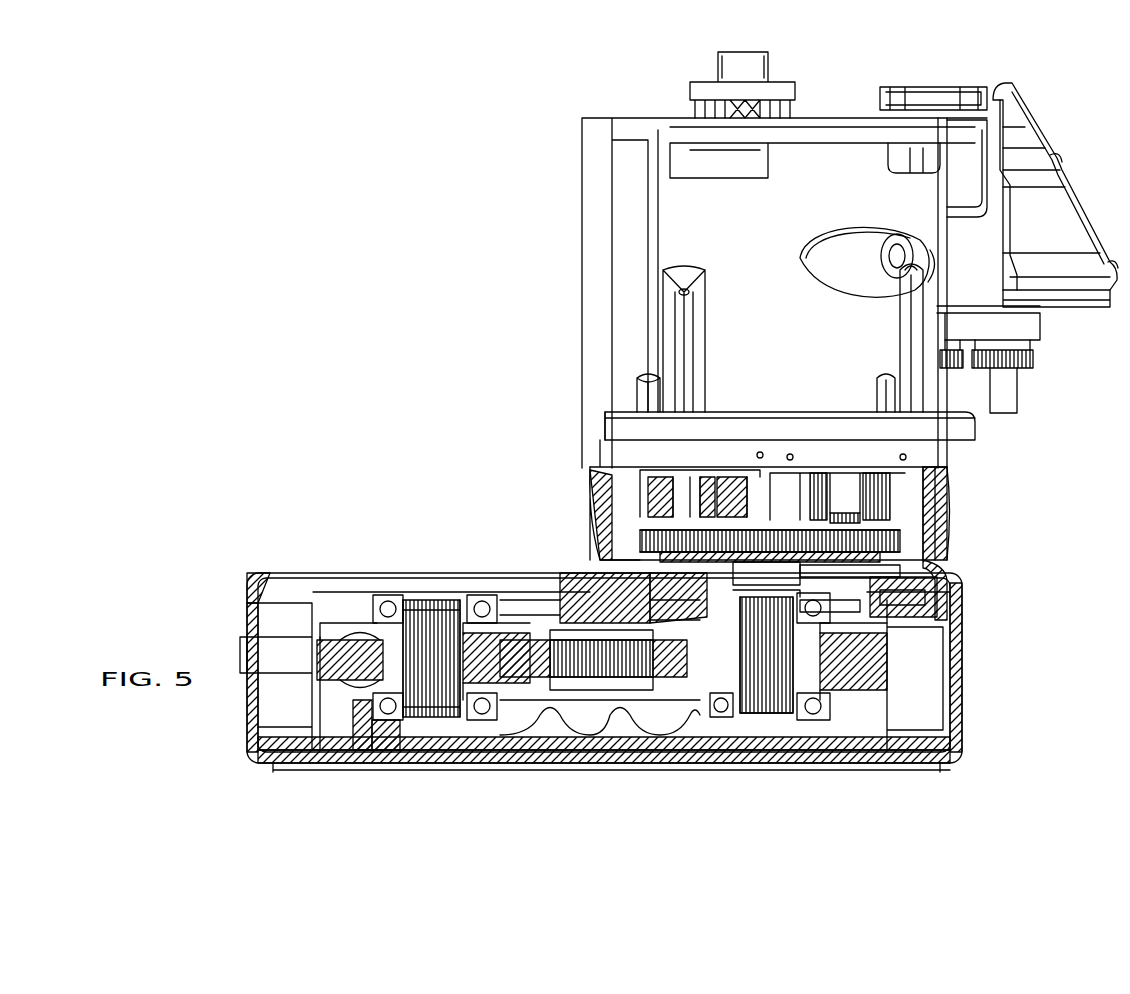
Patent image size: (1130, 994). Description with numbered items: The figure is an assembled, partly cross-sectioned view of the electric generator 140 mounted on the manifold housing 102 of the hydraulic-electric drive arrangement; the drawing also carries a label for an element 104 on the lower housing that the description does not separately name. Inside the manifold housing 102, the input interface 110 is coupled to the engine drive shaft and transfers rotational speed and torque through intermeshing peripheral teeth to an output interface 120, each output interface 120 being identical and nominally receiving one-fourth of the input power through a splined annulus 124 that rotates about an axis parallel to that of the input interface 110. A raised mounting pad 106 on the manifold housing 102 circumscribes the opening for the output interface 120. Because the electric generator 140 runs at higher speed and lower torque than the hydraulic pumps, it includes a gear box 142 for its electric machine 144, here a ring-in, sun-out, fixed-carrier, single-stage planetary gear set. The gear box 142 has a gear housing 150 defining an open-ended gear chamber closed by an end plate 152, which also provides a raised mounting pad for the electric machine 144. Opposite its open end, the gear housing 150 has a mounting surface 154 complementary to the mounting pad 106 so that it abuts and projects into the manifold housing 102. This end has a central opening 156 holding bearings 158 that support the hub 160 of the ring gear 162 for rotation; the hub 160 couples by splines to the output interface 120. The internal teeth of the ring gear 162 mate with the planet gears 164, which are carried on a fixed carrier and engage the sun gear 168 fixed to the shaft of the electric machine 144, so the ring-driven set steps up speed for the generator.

The manifold housing 102 is at (440, 760).
The gear housing 104 is at (968, 740).
The mounting pad 106 is at (885, 583).
The input interface 110 is at (610, 655).
The output interface 120 is at (345, 648).
The splined annulus 124 is at (420, 650).
The electric generator 140 is at (990, 425).
The gear box 142 is at (950, 497).
The electric machine 144 is at (600, 195).
The gear housing 150 is at (600, 505).
The end plate 152 is at (605, 453).
The mounting surface 154 is at (615, 572).
The central opening 156 is at (900, 563).
The bearings 158 is at (820, 605).
The hub 160 is at (750, 640).
The ring gear 162 is at (890, 520).
The planet gears 164 is at (693, 487).
The sun gear 168 is at (800, 510).